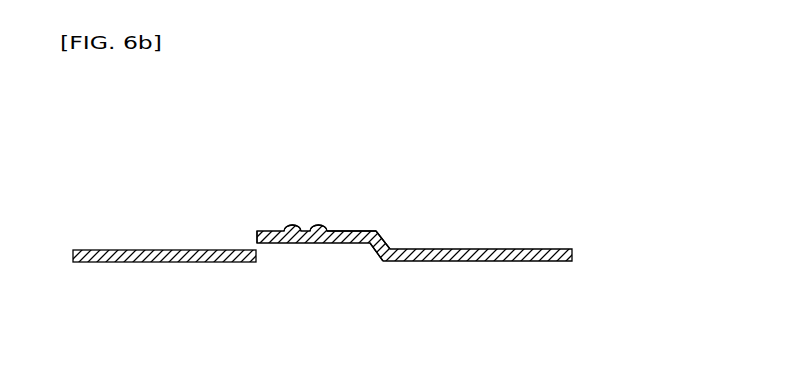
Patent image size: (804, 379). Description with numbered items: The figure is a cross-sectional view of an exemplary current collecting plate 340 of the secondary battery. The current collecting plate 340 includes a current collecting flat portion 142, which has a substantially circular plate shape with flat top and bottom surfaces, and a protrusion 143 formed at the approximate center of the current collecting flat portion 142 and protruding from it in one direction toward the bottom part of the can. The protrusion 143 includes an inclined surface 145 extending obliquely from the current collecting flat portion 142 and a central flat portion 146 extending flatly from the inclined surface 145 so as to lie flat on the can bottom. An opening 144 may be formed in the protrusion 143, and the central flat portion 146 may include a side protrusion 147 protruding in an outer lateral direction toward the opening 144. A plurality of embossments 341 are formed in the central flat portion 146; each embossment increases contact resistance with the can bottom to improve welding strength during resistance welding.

The current collecting plate 340 is at (562, 212).
The current collecting flat portion 142 is at (507, 262).
The protrusion 143 is at (380, 228).
The opening 144 is at (257, 249).
The inclined surface 145 is at (385, 246).
The central flat portion 146 is at (360, 230).
The side protrusion 147 is at (257, 241).
The embossments 341 is at (323, 229).